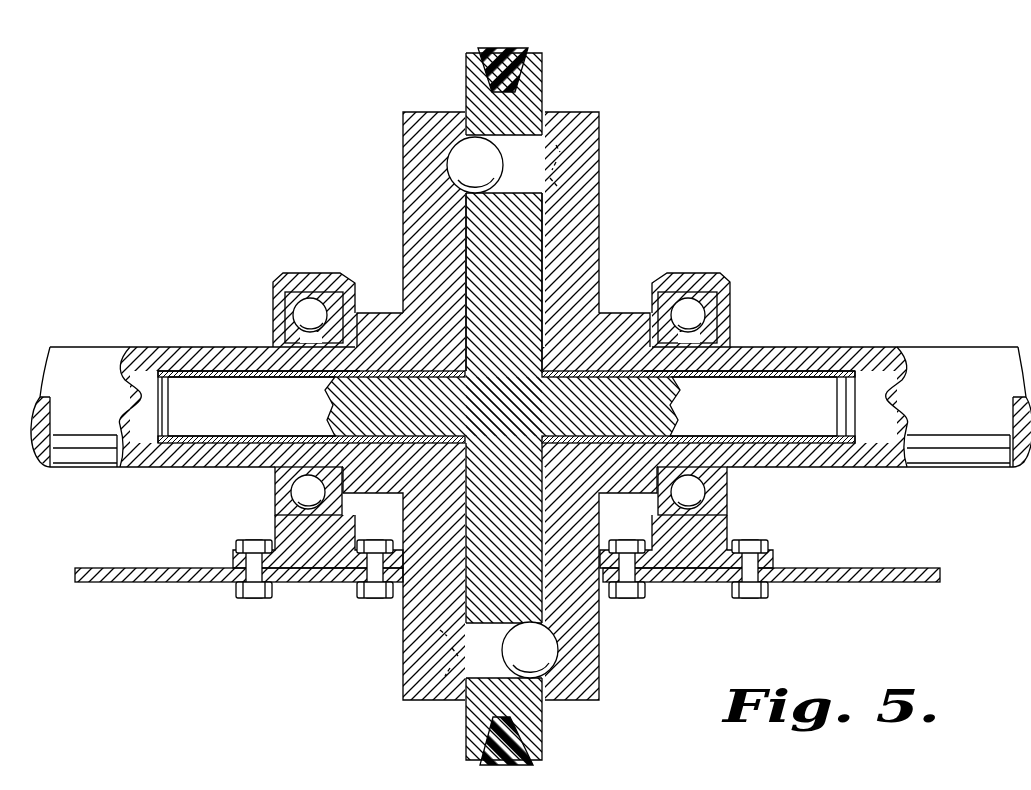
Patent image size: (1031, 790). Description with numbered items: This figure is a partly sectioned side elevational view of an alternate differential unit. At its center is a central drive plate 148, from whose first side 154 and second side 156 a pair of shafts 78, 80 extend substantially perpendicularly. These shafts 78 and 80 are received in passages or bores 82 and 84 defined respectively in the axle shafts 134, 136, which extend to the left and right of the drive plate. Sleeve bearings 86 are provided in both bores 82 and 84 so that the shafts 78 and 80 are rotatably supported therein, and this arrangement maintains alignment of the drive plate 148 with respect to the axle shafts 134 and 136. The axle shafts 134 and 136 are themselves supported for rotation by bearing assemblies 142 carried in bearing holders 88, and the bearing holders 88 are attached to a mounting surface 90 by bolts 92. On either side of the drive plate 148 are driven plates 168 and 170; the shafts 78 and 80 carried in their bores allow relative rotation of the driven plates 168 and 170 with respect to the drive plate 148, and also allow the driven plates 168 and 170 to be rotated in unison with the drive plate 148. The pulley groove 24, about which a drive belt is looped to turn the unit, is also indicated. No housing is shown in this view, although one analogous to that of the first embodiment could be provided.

The pulley groove 24 is at (510, 47).
The central drive plate 148 is at (523, 103).
The driven plate 168 is at (427, 148).
The driven plate 170 is at (590, 177).
The first side 154 is at (465, 247).
The second side 156 is at (543, 247).
The bearing holder 88 is at (313, 272).
The bearing assembly 142 is at (293, 279).
The sleeve bearing 86 is at (393, 368).
The axle shaft 134 is at (156, 347).
The axle shaft 136 is at (897, 347).
The bore 82 is at (268, 370).
The bore 84 is at (717, 380).
The shaft 78 is at (260, 411).
The shaft 80 is at (794, 407).
The mounting surface 90 is at (165, 565).
The bolt 92 is at (363, 600).